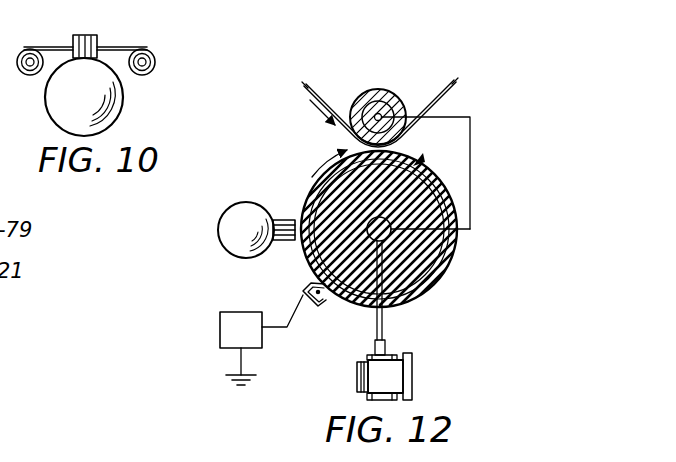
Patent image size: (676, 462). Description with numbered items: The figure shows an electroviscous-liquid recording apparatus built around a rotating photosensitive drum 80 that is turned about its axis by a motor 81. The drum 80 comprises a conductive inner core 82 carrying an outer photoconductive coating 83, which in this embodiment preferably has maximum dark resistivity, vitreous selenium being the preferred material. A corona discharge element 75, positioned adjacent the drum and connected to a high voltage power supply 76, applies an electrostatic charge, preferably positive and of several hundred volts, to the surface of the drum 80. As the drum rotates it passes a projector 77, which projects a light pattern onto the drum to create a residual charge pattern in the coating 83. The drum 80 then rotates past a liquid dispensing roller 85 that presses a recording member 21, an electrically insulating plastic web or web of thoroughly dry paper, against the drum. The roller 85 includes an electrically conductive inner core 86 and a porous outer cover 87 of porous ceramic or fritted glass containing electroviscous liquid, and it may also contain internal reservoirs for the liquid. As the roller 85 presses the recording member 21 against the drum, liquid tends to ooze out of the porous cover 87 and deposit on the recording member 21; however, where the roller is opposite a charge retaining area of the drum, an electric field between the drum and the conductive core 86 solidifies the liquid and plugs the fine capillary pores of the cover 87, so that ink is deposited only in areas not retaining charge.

In FIG. 12, the recording member 21 is at (303, 87).
In FIG. 12, the corona discharge element 75 is at (324, 301).
In FIG. 12, the high voltage power supply 76 is at (263, 347).
In FIG. 10, the projector 77 is at (123, 94).
In FIG. 12, the projector 77 is at (228, 253).
In FIG. 12, the rotating drum 80 is at (440, 298).
In FIG. 12, the motor 81 is at (357, 378).
In FIG. 12, the conductive inner core 82 is at (438, 252).
In FIG. 12, the photoconductive coating 83 is at (447, 265).
In FIG. 12, the liquid dispensing roller 85 is at (422, 93).
In FIG. 12, the electrically conductive inner core 86 is at (382, 101).
In FIG. 12, the porous outer cover 87 is at (361, 98).